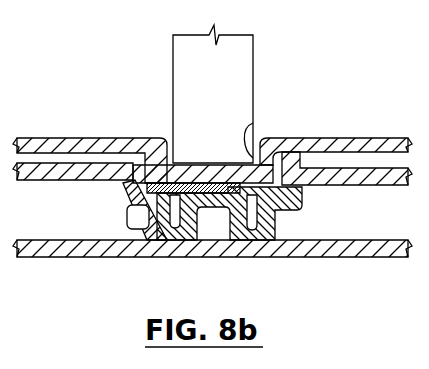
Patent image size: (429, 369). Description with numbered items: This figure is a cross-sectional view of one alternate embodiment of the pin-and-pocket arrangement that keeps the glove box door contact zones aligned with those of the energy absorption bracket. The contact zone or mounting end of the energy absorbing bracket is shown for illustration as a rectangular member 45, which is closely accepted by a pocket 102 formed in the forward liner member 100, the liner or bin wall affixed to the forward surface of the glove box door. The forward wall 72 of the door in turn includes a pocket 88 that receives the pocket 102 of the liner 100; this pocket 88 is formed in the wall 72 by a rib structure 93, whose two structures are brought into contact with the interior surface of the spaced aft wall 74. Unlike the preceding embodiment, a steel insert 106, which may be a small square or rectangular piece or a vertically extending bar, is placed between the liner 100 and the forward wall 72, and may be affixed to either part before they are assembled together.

The rectangular member 45 is at (245, 60).
The forward wall 72 is at (343, 173).
The aft wall 74 is at (338, 257).
The pocket 88 is at (148, 172).
The rib structure 93 is at (129, 222).
The forward liner member 100 is at (337, 138).
The pocket 102 is at (253, 120).
The steel insert 106 is at (144, 165).